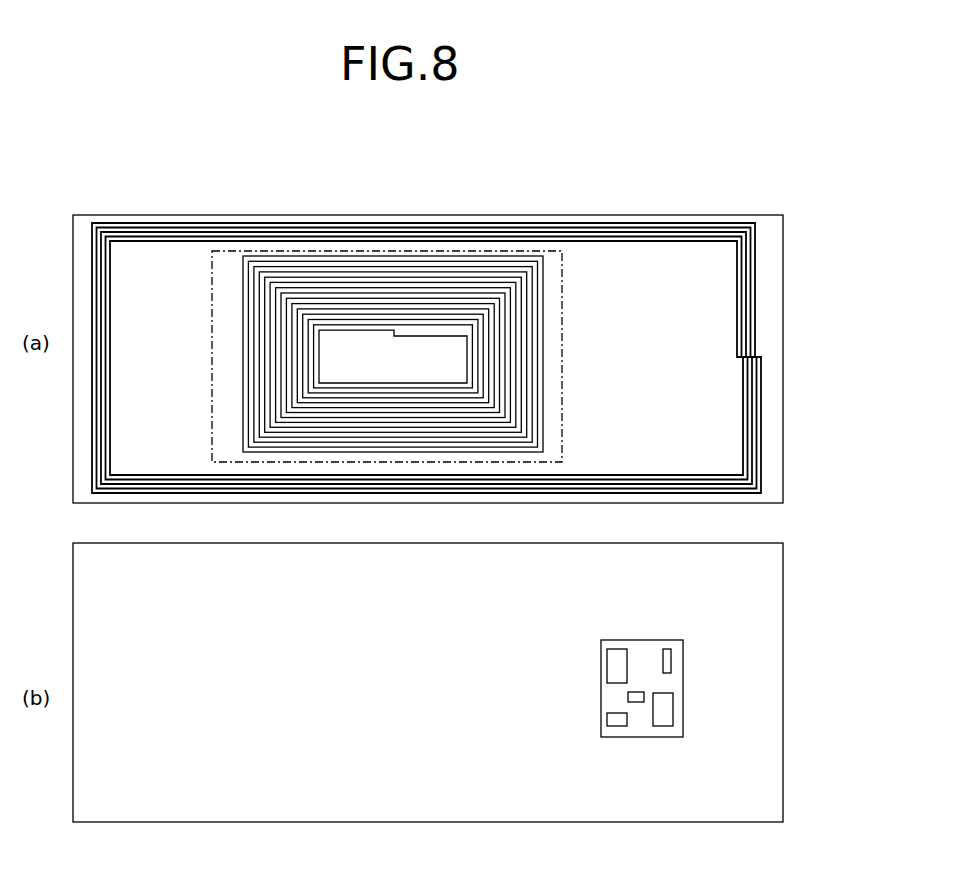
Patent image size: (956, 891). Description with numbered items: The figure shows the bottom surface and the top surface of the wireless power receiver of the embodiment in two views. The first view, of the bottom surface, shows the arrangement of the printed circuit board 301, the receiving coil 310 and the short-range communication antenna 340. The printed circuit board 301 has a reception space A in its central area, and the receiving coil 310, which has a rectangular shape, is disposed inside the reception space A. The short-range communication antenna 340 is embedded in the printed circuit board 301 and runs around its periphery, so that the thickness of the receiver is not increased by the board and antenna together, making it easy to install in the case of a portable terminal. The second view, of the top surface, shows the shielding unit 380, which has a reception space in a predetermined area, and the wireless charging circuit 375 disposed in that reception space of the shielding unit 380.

The printed circuit board 301 is at (780, 361).
The receiving coil 310 is at (390, 258).
The short-range communication antenna 340 is at (630, 233).
The reception space A is at (470, 251).
The shielding unit 380 is at (772, 678).
The wireless charging circuit 375 is at (641, 737).